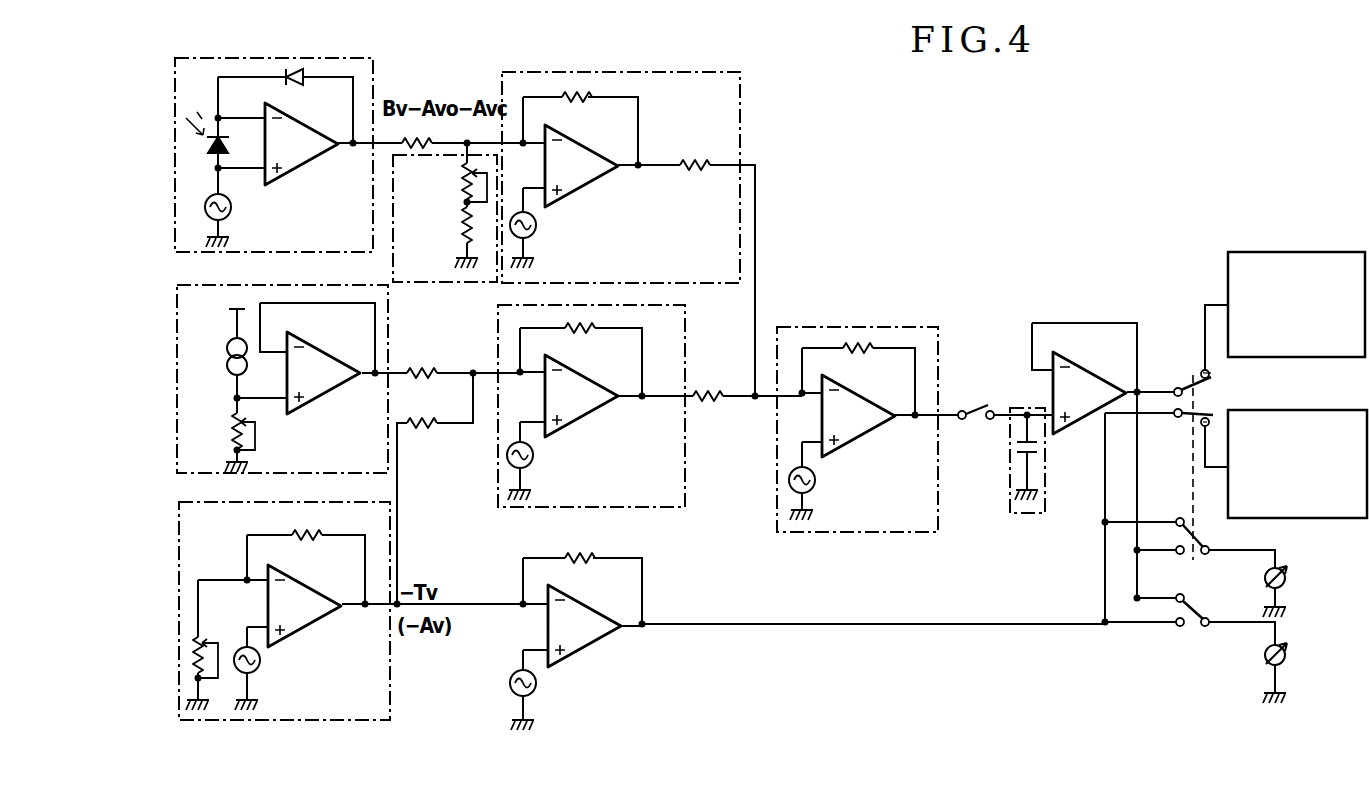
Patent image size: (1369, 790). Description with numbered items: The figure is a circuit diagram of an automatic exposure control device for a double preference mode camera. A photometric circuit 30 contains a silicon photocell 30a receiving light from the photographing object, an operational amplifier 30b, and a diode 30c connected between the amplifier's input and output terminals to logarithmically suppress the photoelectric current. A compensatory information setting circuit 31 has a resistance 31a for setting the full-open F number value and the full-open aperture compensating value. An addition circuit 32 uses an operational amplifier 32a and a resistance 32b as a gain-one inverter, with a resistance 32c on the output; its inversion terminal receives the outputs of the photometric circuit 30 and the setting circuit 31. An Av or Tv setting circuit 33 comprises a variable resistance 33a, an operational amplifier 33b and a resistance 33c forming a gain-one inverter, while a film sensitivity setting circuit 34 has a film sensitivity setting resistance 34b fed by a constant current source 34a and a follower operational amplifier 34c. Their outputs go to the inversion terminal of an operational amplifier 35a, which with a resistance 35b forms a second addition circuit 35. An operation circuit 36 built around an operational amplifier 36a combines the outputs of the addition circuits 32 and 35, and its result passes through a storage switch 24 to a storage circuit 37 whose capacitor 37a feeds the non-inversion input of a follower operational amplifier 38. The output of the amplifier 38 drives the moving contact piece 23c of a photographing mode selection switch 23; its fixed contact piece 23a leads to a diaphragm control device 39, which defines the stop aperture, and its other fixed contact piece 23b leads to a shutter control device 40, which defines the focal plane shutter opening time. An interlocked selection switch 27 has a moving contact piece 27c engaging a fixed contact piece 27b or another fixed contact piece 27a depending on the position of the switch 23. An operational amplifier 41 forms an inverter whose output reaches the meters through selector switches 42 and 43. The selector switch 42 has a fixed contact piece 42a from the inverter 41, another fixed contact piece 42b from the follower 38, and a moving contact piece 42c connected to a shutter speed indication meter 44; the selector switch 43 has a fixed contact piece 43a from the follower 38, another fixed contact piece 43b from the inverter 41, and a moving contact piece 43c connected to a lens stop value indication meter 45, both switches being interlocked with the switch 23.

The photographing mode selection switch 23 is at (1203, 363).
The fixed contact piece 23a is at (1203, 371).
The fixed contact piece 23b is at (1207, 418).
The moving contact piece 23c is at (1177, 388).
The storage switch 24 is at (977, 422).
The selection switch 27 is at (1207, 493).
The fixed contact piece 27a is at (1210, 375).
The fixed contact piece 27b is at (1204, 426).
The moving contact piece 27c is at (1178, 418).
The photometric circuit 30 is at (276, 58).
The silicon photocell 30a is at (207, 148).
The operational amplifier 30b is at (297, 162).
The diode 30c is at (300, 85).
The compensatory information setting circuit 31 is at (425, 282).
The resistance 31a is at (462, 193).
The addition circuit 32 is at (537, 72).
The operational amplifier 32a is at (578, 178).
The resistance 32b is at (575, 100).
The resistance 32c is at (697, 171).
The Av or Tv setting circuit 33 is at (179, 523).
The variable resistance 33a is at (197, 653).
The operational amplifier 33b is at (315, 608).
The resistance 33c is at (305, 537).
The film sensitivity setting circuit 34 is at (177, 323).
The constant current source 34a is at (227, 352).
The film sensitivity setting resistance 34b is at (230, 417).
The operational amplifier 34c is at (325, 385).
The addition circuit 35 is at (685, 455).
The operational amplifier 35a is at (567, 420).
The resistance 35b is at (580, 335).
The operation circuit 36 is at (823, 325).
The operational amplifier 36a is at (870, 408).
The storage circuit 37 is at (1010, 507).
The capacitor 37a is at (1035, 451).
The operational amplifier 38 is at (1098, 388).
The diaphragm control device 39 is at (1332, 252).
The shutter control device 40 is at (1332, 410).
The operational amplifier 41 is at (594, 638).
The selector switch 42 is at (1189, 540).
The fixed contact piece 42a is at (1180, 518).
The fixed contact piece 42b is at (1180, 554).
The moving contact piece 42c is at (1207, 553).
The selector switch 43 is at (958, 629).
The fixed contact piece 43a is at (1175, 604).
The fixed contact piece 43b is at (1180, 628).
The moving contact piece 43c is at (1207, 627).
The shutter speed indication meter 44 is at (1286, 578).
The lens stop value indication meter 45 is at (1286, 655).